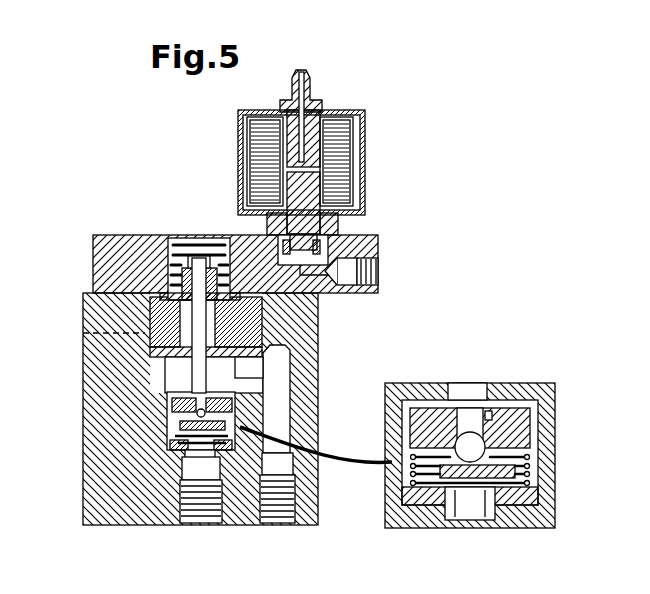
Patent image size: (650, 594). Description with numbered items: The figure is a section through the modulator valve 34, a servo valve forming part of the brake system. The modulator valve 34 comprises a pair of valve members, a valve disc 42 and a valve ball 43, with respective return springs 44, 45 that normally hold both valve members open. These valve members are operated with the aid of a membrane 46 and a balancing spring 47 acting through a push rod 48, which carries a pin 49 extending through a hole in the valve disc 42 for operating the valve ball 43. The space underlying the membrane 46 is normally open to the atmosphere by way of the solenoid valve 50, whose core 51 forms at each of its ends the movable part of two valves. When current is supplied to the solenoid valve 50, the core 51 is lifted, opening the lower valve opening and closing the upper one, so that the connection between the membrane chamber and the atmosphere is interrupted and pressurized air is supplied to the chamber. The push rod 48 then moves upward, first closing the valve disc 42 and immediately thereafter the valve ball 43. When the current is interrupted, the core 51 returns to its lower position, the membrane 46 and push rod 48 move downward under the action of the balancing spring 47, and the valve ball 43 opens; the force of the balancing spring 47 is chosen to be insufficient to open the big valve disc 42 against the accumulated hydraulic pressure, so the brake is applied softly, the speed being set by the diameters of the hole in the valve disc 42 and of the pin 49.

The modulator valve 34 is at (80, 432).
The valve disc 42 is at (430, 420).
The valve ball 43 is at (462, 447).
The return spring 44 is at (407, 484).
The return spring 45 is at (503, 489).
The membrane 46 is at (173, 297).
The balancing spring 47 is at (171, 236).
The push rod 48 is at (197, 376).
The pin 49 is at (489, 417).
The solenoid valve 50 is at (368, 173).
The core 51 is at (300, 213).